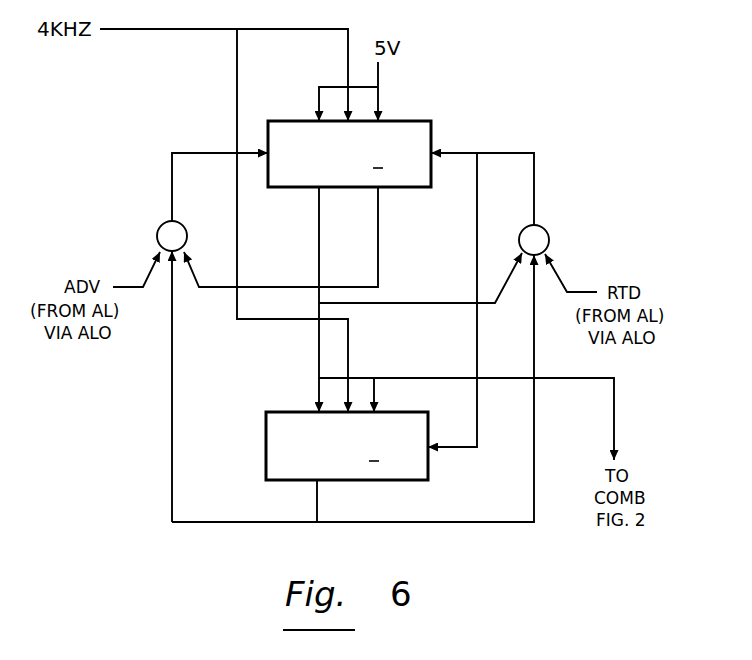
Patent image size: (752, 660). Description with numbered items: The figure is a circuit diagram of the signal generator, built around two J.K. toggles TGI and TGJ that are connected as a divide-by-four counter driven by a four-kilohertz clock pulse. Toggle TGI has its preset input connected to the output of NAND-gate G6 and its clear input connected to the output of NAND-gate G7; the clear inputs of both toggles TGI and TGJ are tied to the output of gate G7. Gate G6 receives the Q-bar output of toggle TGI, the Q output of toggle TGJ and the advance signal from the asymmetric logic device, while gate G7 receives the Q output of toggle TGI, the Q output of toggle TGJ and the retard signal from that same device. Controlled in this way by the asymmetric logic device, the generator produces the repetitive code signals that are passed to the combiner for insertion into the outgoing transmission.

The J.K. toggle TGI is at (369, 151).
The J.K. toggle TGJ is at (366, 441).
The NAND-gate G6 is at (155, 236).
The NAND-gate G7 is at (549, 240).